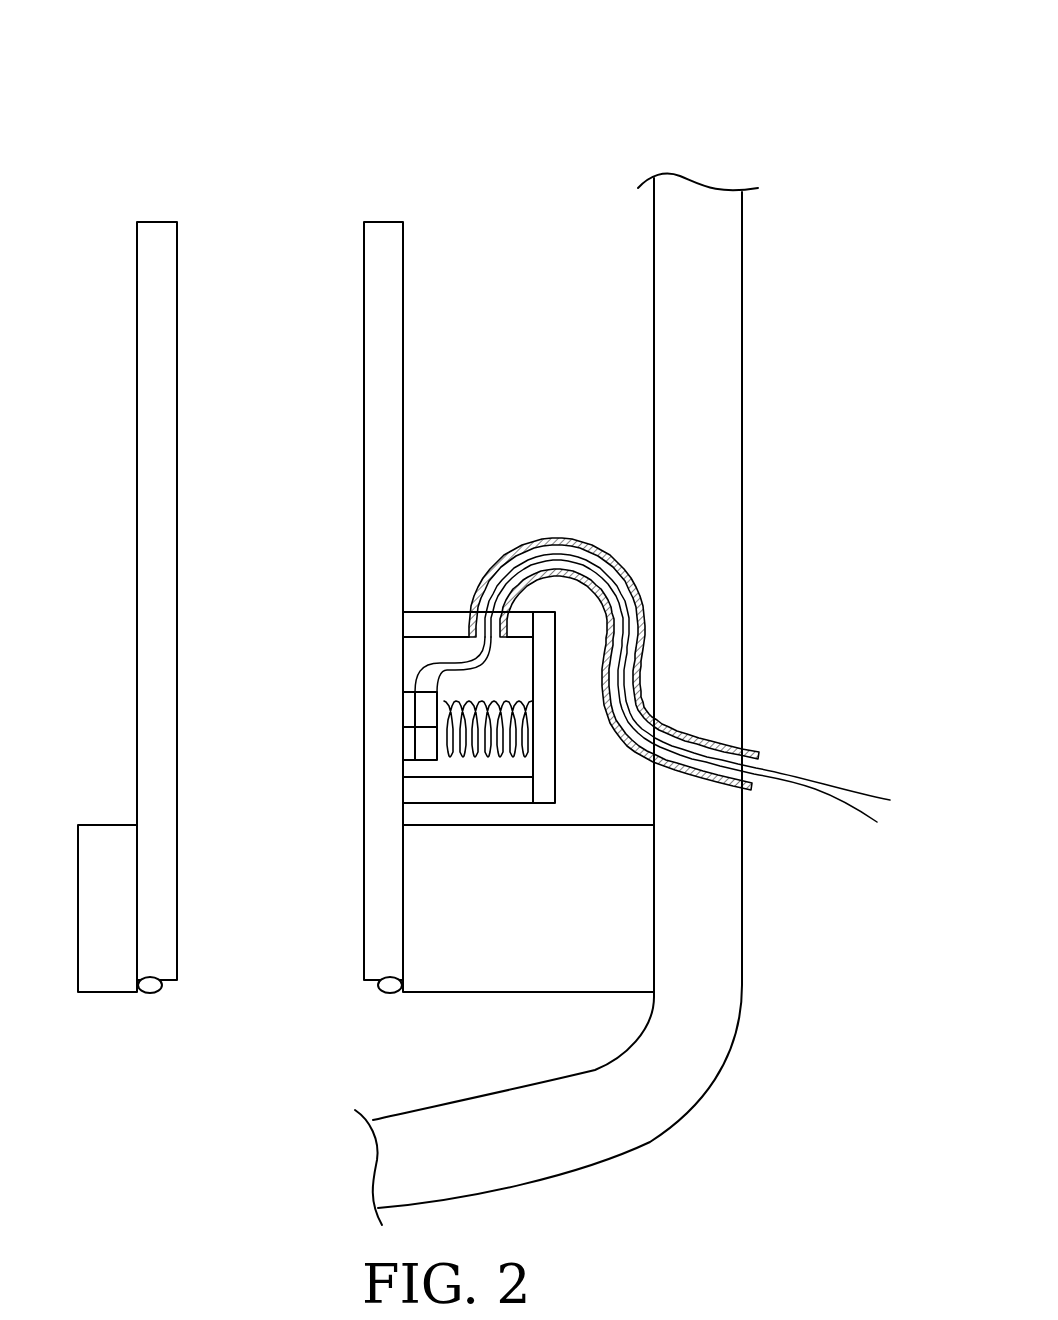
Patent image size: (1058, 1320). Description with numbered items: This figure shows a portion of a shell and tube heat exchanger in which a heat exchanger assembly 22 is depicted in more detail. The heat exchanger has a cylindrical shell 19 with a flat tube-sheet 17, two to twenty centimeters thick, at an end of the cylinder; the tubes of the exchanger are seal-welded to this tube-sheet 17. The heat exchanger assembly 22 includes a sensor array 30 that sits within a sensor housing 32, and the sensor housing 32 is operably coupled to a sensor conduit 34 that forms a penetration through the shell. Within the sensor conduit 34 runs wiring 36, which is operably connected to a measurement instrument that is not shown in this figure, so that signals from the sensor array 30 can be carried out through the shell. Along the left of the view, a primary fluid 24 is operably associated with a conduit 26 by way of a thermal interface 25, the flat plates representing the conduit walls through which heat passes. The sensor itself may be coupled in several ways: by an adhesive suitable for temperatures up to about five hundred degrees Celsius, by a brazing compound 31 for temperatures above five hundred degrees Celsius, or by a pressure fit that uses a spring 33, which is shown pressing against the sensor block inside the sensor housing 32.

The heat exchanger assembly 22 is at (553, 88).
The primary fluid 24 is at (280, 275).
The thermal interface 25 is at (162, 467).
The conduit 26 is at (553, 283).
The cylindrical shell 19 is at (697, 487).
The tube-sheet 17 is at (536, 945).
The sensor housing 32 is at (430, 622).
The brazing compound 31 is at (410, 735).
The sensor array 30 is at (425, 748).
The spring 33 is at (490, 757).
The sensor conduit 34 is at (640, 598).
The wiring 36 is at (817, 780).